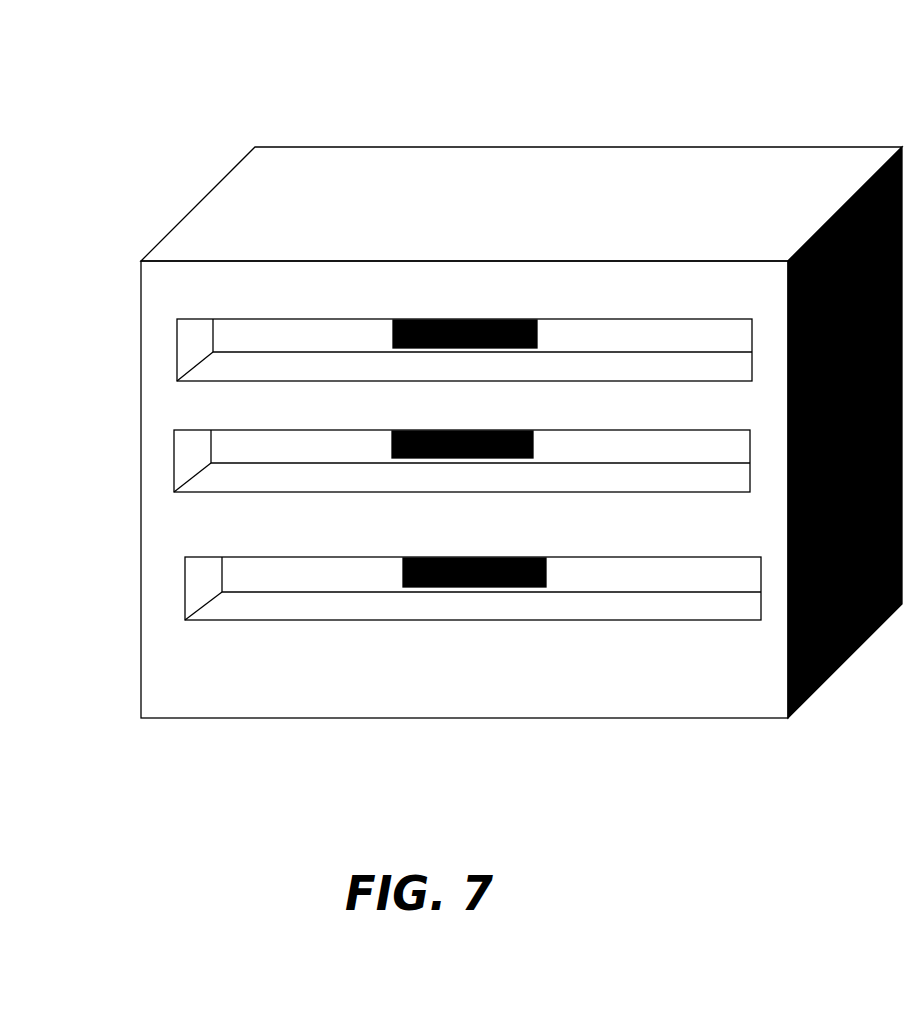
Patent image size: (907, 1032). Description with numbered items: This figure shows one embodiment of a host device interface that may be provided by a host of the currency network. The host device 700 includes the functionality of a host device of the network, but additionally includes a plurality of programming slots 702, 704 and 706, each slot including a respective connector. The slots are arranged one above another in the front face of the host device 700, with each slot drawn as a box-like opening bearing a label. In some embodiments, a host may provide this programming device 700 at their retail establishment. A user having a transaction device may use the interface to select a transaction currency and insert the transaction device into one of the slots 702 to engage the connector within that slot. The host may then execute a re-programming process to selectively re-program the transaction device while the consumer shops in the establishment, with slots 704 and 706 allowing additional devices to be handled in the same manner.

The host device 700 is at (133, 61).
The programming slot 702 is at (177, 372).
The programming slot 704 is at (174, 458).
The programming slot 706 is at (185, 578).